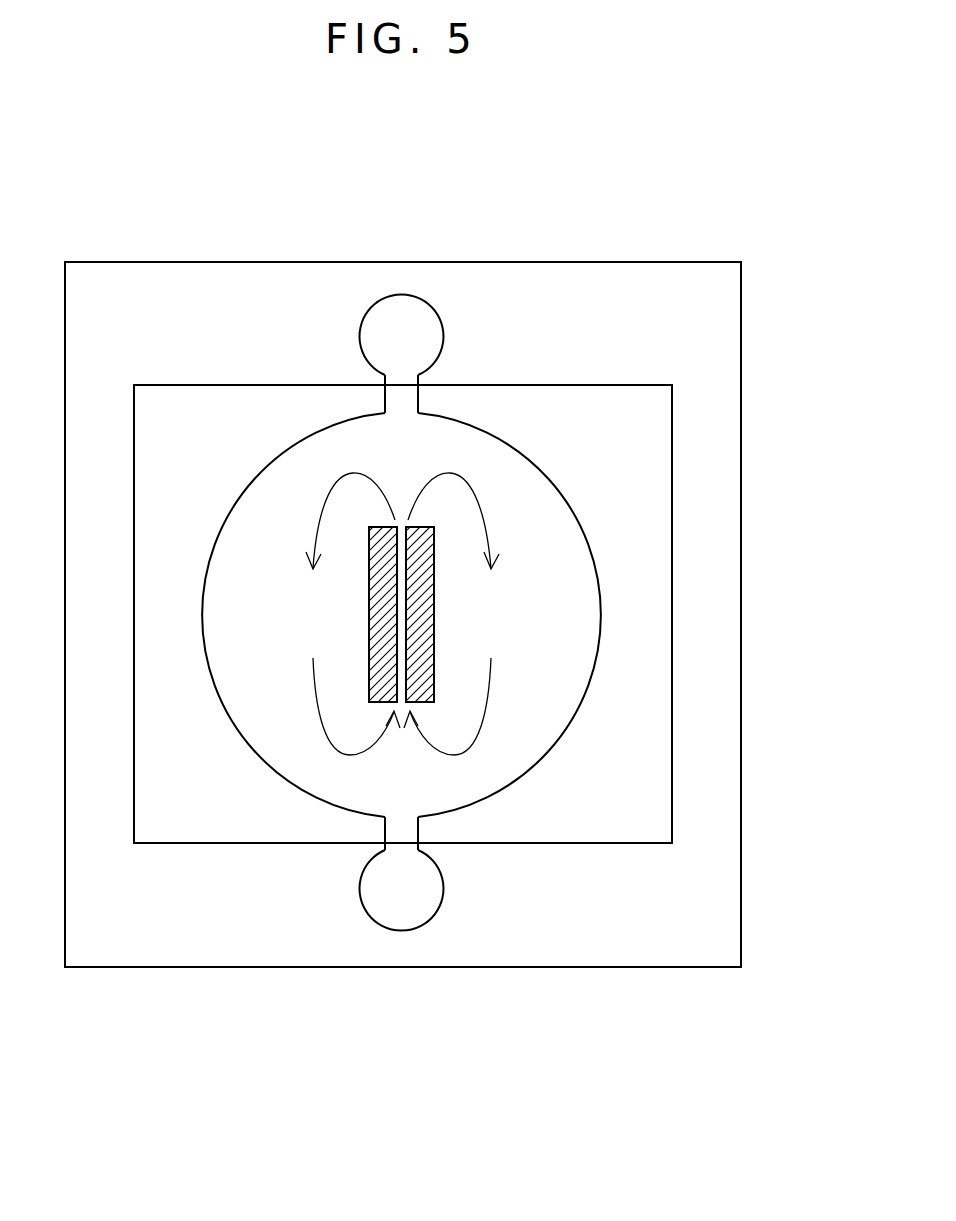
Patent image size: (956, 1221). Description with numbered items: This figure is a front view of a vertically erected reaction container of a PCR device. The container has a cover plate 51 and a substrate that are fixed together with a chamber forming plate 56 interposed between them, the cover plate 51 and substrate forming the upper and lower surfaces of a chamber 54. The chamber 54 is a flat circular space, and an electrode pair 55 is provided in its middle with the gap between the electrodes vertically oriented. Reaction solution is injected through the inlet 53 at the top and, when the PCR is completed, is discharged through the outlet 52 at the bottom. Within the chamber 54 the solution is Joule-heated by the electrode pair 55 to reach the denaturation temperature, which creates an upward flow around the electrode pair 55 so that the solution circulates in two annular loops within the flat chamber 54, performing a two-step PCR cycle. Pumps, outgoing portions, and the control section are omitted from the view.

The cover plate 51 is at (672, 438).
The outlet 52 is at (398, 930).
The inlet 53 is at (403, 295).
The chamber 54 is at (598, 560).
The electrode pair 55 is at (442, 610).
The chamber forming plate 56 is at (740, 843).